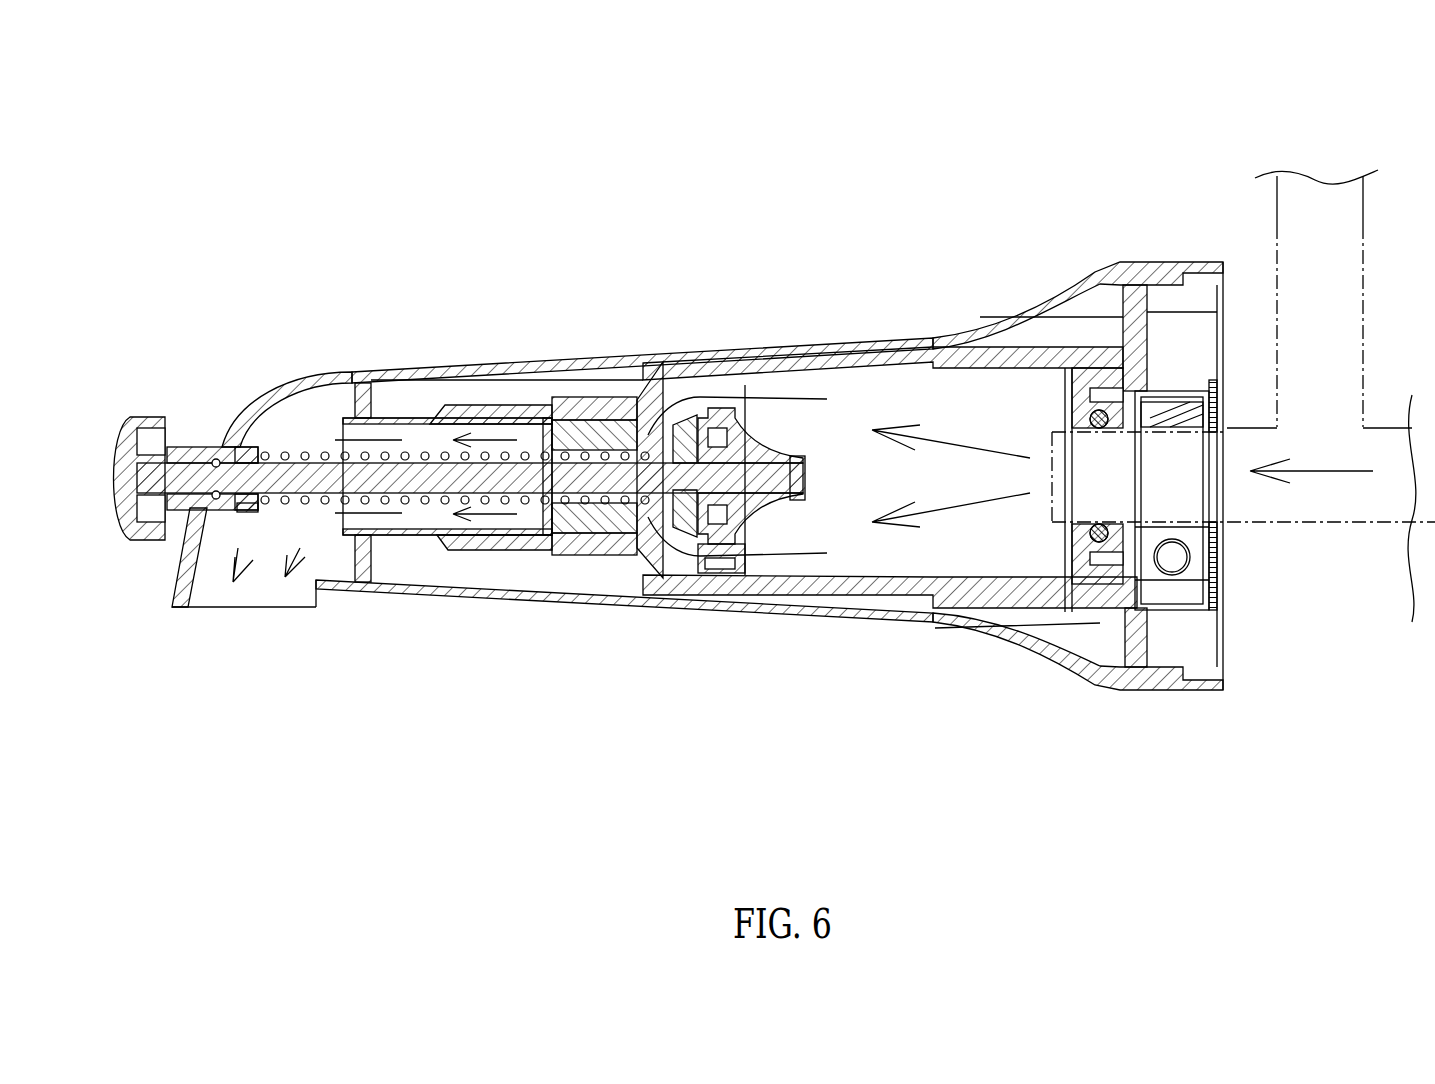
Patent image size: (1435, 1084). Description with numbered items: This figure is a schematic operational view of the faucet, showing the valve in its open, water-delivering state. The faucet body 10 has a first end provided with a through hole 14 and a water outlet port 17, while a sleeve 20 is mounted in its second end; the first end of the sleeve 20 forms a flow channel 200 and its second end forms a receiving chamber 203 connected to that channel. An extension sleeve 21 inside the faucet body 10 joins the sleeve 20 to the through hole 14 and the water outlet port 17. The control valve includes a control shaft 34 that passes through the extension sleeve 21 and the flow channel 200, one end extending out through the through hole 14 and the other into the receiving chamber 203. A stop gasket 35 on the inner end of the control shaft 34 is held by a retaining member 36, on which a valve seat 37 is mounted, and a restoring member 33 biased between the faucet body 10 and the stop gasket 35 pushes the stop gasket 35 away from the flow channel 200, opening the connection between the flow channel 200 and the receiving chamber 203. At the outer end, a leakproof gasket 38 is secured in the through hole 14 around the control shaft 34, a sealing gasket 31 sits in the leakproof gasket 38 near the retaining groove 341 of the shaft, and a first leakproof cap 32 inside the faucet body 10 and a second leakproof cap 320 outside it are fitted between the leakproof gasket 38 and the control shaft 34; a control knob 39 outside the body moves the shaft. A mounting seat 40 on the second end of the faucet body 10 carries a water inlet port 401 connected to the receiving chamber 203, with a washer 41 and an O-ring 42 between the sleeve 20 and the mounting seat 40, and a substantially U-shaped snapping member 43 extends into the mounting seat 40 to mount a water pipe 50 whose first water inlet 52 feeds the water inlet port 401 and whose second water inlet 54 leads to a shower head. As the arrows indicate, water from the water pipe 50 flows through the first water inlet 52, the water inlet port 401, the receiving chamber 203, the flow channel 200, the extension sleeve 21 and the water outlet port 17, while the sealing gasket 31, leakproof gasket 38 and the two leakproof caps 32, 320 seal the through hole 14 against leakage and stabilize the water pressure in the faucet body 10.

The faucet body 10 is at (487, 362).
The through hole 14 is at (163, 540).
The water outlet port 17 is at (248, 607).
The sleeve 20 is at (797, 345).
The extension sleeve 21 is at (512, 537).
The sealing gasket 31 is at (468, 616).
The retaining groove 341 is at (185, 512).
The first leakproof cap 32 is at (242, 447).
The second leakproof cap 320 is at (178, 447).
The restoring member 33 is at (358, 580).
The control shaft 34 is at (343, 515).
The stop gasket 35 is at (652, 577).
The retaining member 36 is at (652, 362).
The valve seat 37 is at (713, 573).
The leakproof gasket 38 is at (203, 447).
The control knob 39 is at (130, 417).
The mounting seat 40 is at (1130, 348).
The washer 41 is at (1090, 550).
The O-ring 42 is at (1073, 370).
The snapping member 43 is at (1193, 573).
The water inlet port 401 is at (1168, 487).
The water pipe 50 is at (1377, 510).
The first water inlet 52 is at (1242, 512).
The second water inlet 54 is at (1352, 356).
The flow channel 200 is at (592, 443).
The receiving chamber 203 is at (863, 515).